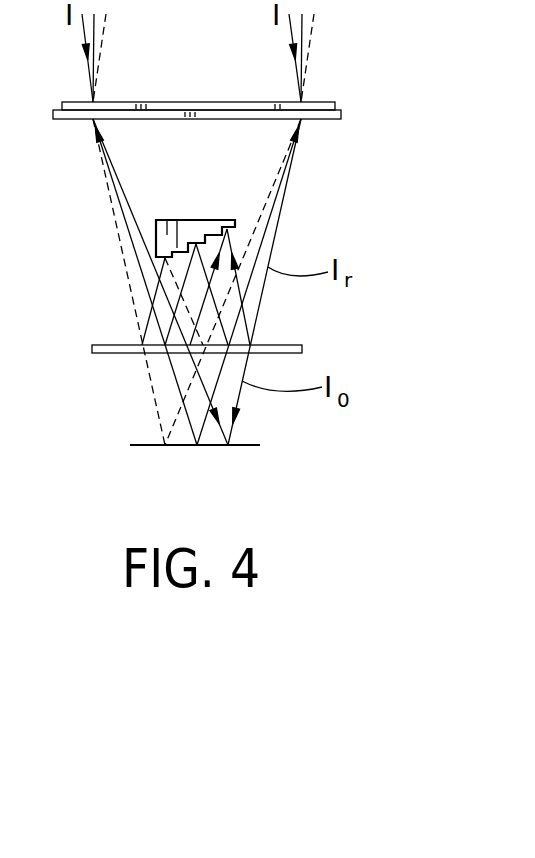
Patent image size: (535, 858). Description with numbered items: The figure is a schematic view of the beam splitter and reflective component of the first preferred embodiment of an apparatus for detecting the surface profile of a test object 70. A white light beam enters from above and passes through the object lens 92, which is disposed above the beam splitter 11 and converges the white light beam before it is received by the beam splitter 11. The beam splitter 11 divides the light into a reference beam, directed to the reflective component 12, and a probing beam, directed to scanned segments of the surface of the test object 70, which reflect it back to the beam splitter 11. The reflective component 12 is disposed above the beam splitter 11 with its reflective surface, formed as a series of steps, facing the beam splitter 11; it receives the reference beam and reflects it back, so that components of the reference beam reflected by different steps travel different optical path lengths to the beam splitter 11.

The object lens 92 is at (341, 115).
The reflective component 12 is at (198, 219).
The beam splitter 11 is at (283, 346).
The test object 70 is at (243, 446).